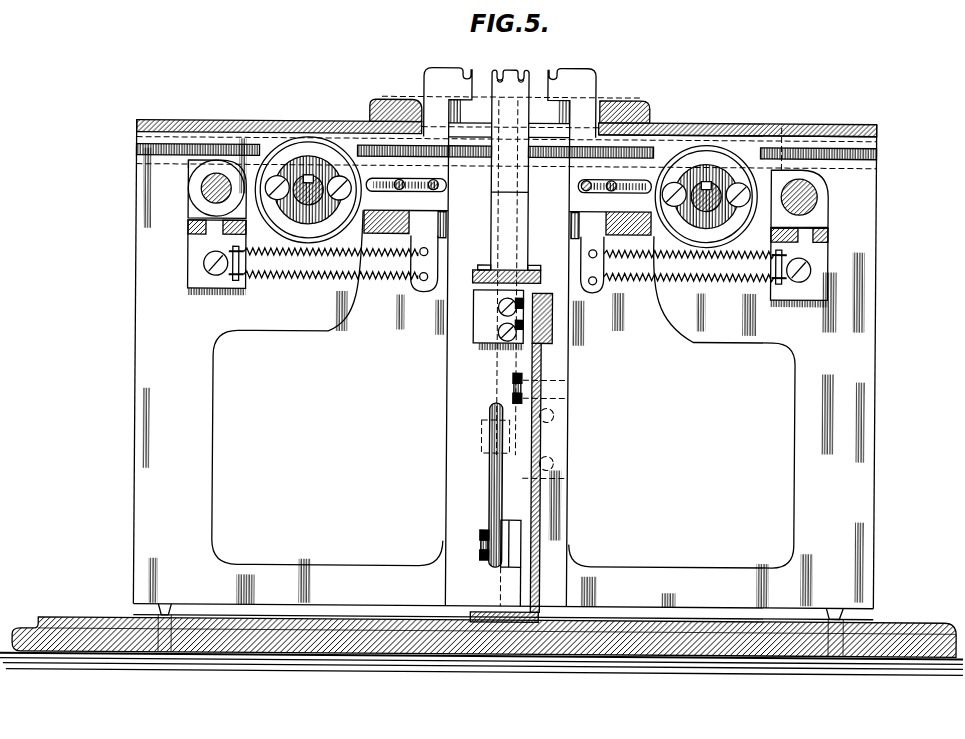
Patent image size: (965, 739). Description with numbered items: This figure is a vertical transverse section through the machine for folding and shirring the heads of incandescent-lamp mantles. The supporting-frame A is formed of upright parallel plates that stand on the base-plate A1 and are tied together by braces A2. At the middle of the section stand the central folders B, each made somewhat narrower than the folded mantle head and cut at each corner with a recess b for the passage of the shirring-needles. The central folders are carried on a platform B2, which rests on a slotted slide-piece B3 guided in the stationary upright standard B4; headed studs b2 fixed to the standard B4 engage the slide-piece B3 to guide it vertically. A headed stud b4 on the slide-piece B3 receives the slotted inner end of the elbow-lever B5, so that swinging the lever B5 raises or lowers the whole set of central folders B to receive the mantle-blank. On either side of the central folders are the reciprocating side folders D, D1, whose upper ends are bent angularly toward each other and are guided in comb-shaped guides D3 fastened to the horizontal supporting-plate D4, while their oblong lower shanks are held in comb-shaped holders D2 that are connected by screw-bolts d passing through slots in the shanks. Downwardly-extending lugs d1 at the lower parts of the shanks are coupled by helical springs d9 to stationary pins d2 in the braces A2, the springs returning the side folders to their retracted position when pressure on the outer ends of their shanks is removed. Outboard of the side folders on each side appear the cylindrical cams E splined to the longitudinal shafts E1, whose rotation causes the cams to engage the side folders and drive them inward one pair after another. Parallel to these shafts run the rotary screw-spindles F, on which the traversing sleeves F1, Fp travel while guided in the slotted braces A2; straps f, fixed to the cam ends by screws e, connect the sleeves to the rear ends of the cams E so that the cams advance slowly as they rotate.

The supporting-frame A is at (871, 490).
The base-plate A1 is at (900, 622).
The braces A2 is at (188, 233).
The central folders B is at (509, 262).
The platform B2 is at (472, 277).
The slotted slide-piece B3 is at (516, 570).
The stationary upright standard B4 is at (541, 497).
The elbow-lever B5 is at (493, 496).
The recess b is at (496, 72).
The headed studs b2 is at (473, 319).
The headed stud b4 is at (481, 545).
The side folders D is at (426, 72).
The side folders D1 is at (590, 72).
The comb-shaped holders D2 is at (392, 236).
The comb-shaped guides D3 is at (378, 110).
The horizontal supporting-plate D4 is at (708, 130).
The screw-bolts d is at (402, 182).
The downwardly-extending lugs d1 is at (423, 292).
The stationary pins d2 is at (779, 285).
The helical springs d9 is at (325, 262).
The cylindrical cams E is at (290, 150).
The longitudinal shafts E1 is at (302, 160).
The screws e is at (274, 202).
The rotary screw-spindles F is at (195, 186).
The traversing sleeves F1 is at (822, 190).
The traversing sleeves Fp is at (798, 177).
The straps f is at (242, 166).